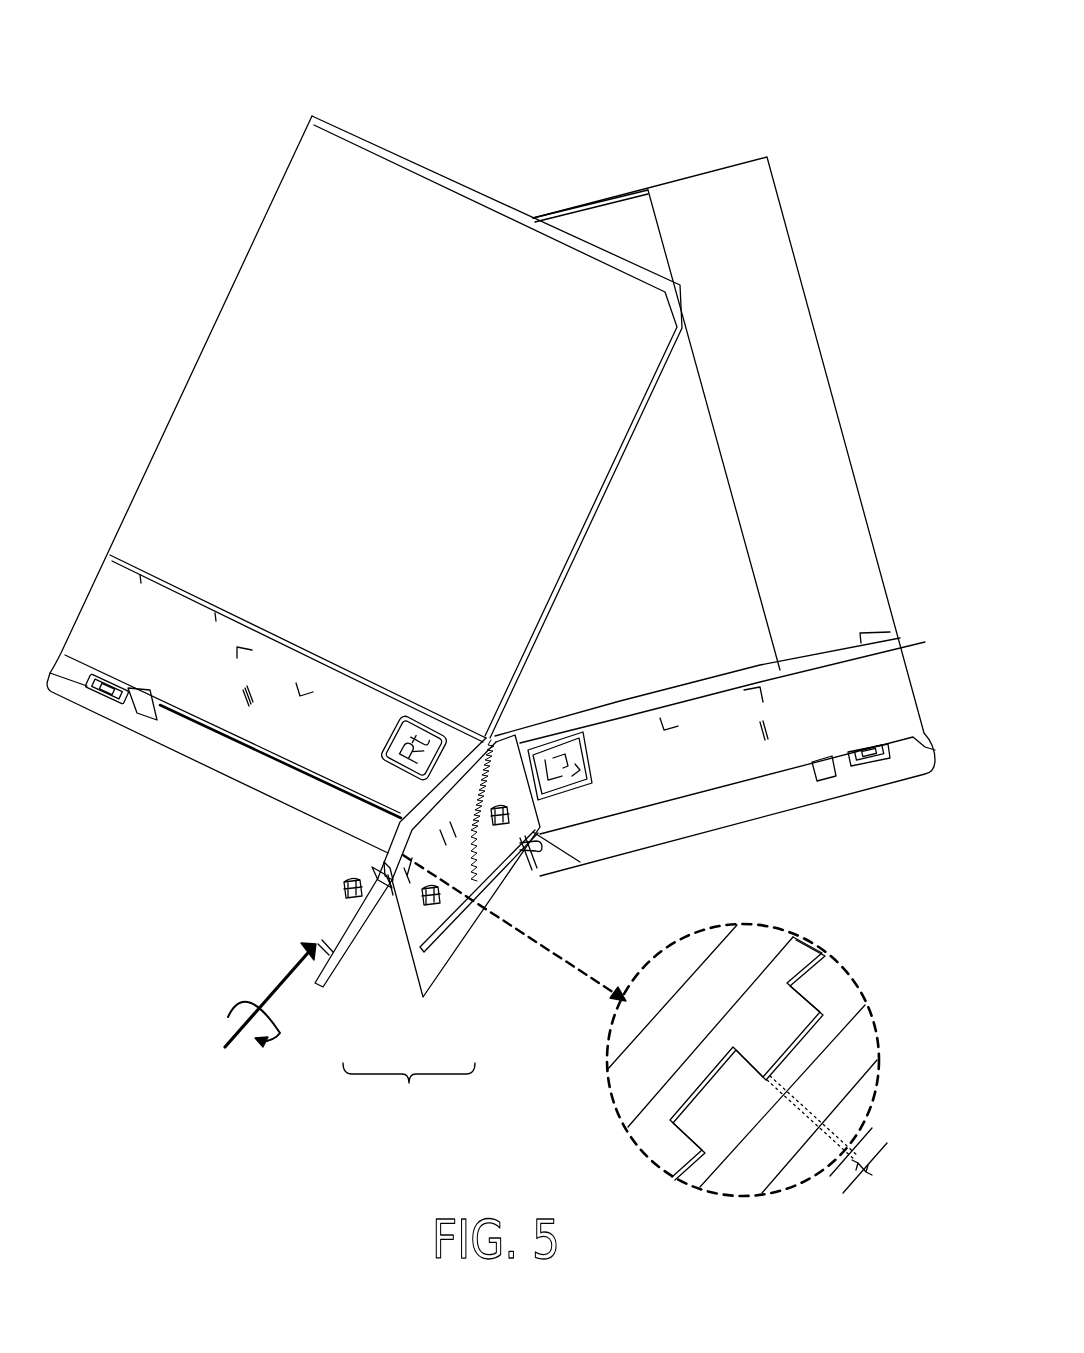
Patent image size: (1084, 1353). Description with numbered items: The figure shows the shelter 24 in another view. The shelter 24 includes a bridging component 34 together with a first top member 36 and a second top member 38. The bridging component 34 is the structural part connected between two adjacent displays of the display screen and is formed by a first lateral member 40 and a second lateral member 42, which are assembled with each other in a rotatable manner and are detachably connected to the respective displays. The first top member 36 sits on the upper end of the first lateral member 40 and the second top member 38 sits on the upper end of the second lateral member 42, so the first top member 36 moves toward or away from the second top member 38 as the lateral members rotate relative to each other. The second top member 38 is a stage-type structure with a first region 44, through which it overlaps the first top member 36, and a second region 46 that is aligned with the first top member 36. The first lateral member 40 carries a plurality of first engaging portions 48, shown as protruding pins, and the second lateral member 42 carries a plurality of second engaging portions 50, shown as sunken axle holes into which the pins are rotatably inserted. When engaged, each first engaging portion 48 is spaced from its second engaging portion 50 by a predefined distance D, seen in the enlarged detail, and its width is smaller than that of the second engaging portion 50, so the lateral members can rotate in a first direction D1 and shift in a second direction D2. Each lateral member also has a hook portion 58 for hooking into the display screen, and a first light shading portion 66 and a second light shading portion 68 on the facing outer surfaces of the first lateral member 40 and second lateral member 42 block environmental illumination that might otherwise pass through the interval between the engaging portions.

The shelter 24 is at (525, 140).
The bridging component 34 is at (409, 1091).
The first top member 36 is at (305, 200).
The second top member 38 is at (715, 467).
The first lateral member 40 is at (357, 940).
The second lateral member 42 is at (450, 957).
The first region 44 is at (612, 215).
The second region 46 is at (725, 214).
The first engaging portion 48 is at (400, 838).
The second engaging portion 50 is at (480, 853).
The hook portion 58 is at (345, 890).
The first light shading portion 66 is at (372, 880).
The second light shading portion 68 is at (388, 882).
The predefined distance D is at (864, 1166).
The first direction D1 is at (269, 1036).
The second direction D2 is at (270, 992).